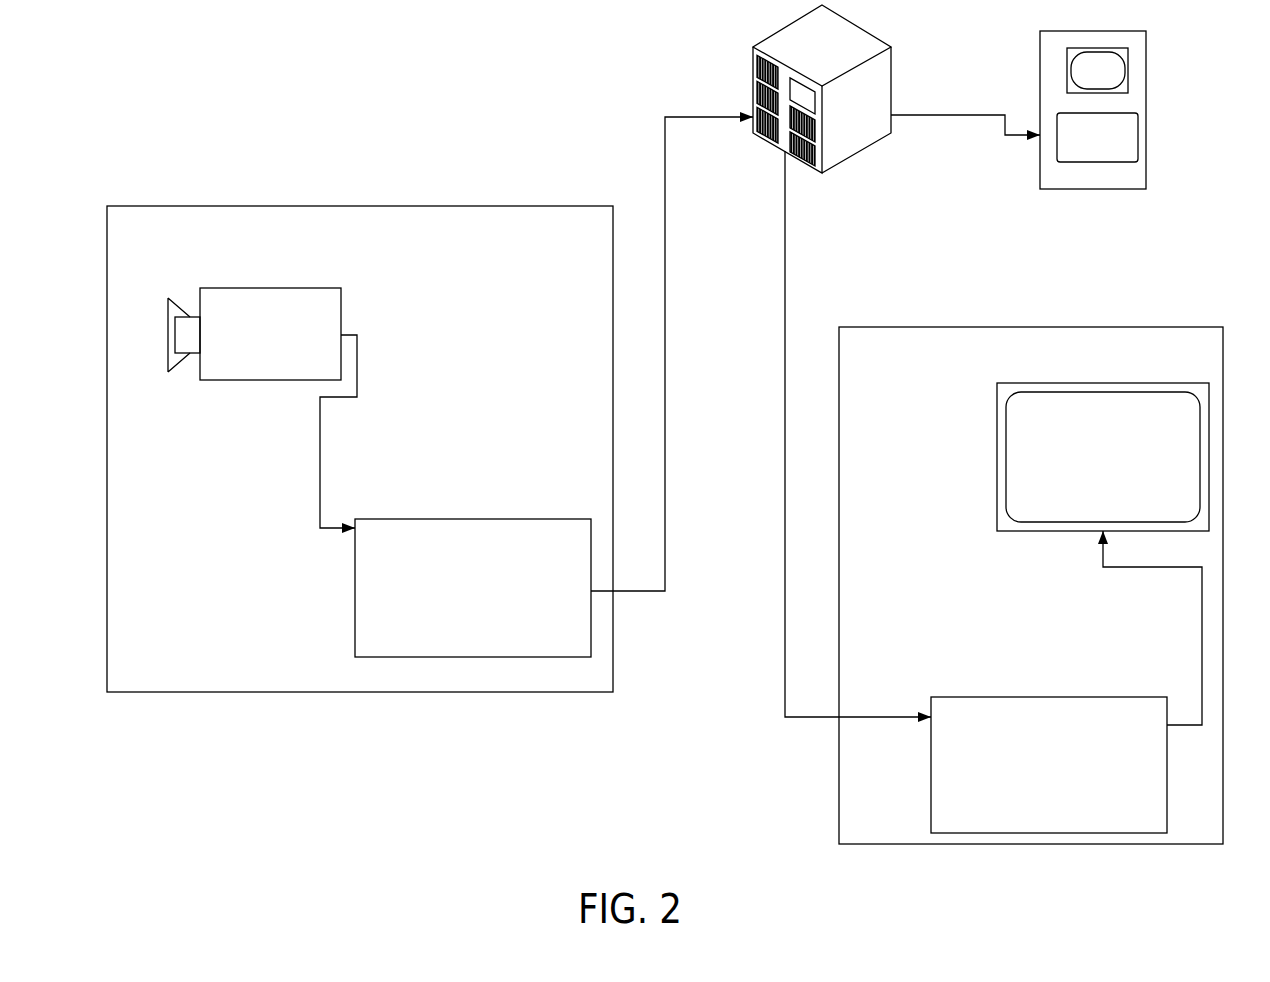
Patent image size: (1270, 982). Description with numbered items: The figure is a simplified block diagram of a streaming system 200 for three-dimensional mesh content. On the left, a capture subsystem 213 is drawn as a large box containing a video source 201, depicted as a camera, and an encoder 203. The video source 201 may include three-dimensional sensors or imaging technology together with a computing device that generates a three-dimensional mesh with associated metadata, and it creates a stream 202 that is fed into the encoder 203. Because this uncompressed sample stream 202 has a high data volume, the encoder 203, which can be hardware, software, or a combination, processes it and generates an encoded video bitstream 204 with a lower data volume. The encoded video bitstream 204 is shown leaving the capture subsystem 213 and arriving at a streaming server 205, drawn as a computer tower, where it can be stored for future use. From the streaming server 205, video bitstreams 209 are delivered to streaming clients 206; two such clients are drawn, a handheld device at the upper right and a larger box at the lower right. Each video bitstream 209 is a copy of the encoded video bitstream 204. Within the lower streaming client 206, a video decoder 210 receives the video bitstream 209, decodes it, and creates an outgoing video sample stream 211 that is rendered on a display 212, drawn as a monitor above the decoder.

The streaming system 200 is at (312, 61).
The video source 201 is at (273, 288).
The stream 202 is at (320, 467).
The encoder 203 is at (488, 519).
The encoded video bitstream 204 is at (665, 152).
The streaming server 205 is at (753, 50).
The streaming client 206 is at (1145, 75).
The video bitstream 209 is at (960, 115).
The video decoder 210 is at (931, 803).
The outgoing video sample stream 211 is at (1202, 625).
The display 212 is at (997, 456).
The capture subsystem 213 is at (262, 692).